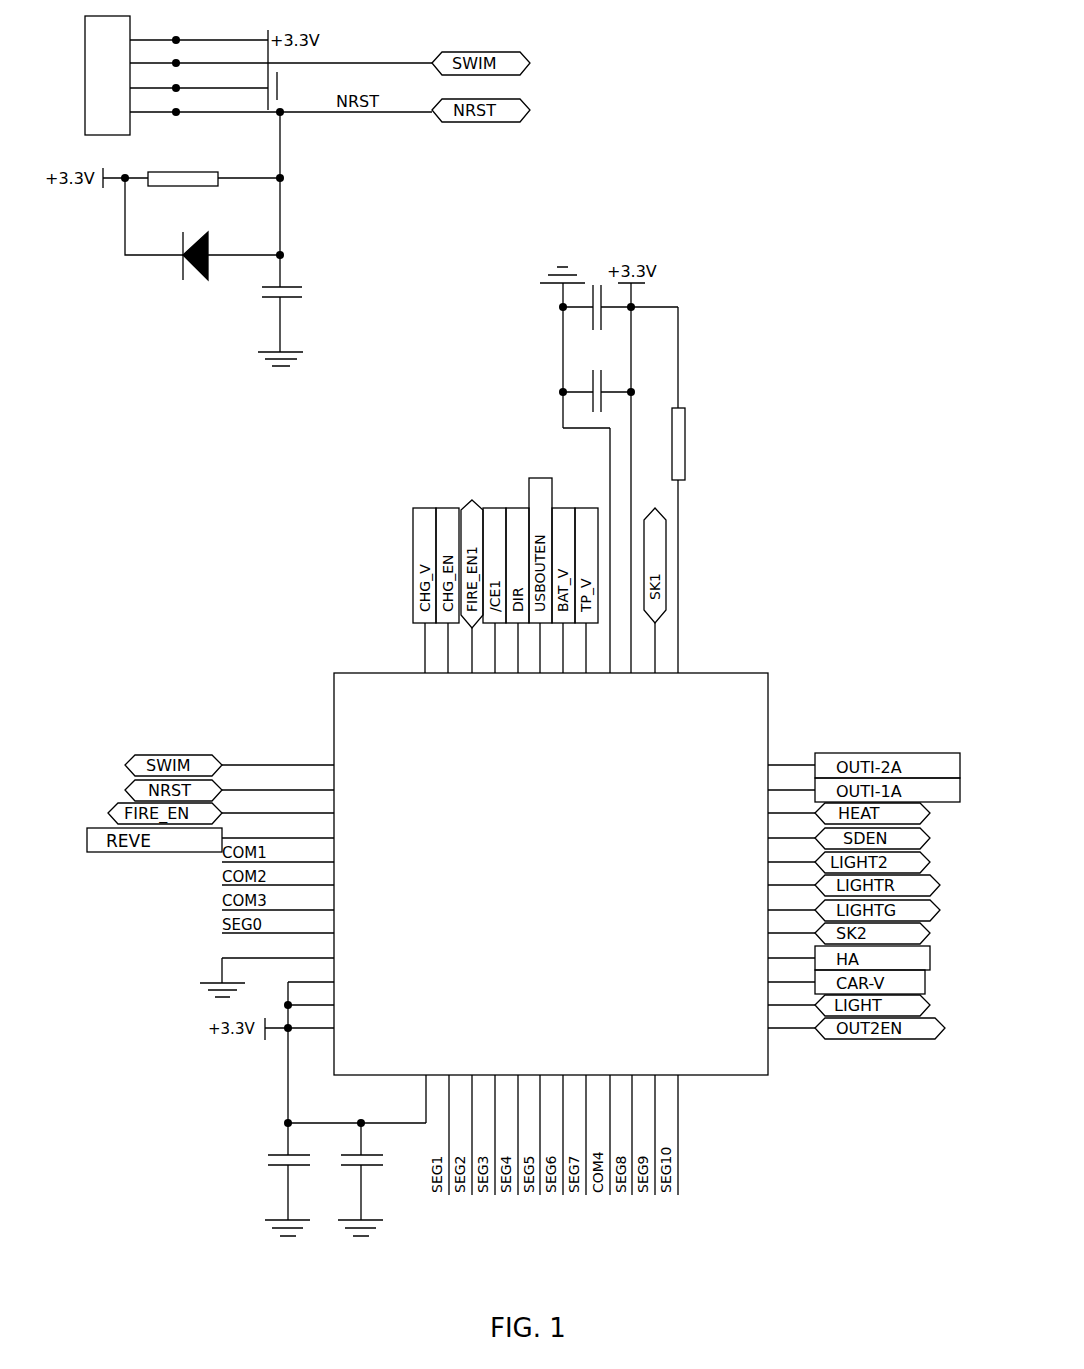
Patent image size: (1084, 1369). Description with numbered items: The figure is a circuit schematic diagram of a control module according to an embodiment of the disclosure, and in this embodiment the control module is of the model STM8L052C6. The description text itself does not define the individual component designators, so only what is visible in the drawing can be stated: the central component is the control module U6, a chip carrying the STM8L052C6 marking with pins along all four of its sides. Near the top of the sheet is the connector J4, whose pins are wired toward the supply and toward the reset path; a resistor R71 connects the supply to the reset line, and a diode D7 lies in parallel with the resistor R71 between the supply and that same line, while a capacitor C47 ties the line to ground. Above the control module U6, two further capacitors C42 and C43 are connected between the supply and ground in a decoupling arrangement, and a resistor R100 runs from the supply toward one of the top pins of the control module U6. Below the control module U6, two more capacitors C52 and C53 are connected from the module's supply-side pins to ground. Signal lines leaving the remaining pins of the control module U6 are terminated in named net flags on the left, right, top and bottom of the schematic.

The ISP connector J4 is at (258, 76).
The resistor R71 is at (193, 171).
The diode D7 is at (204, 229).
The capacitor C47 is at (263, 326).
The capacitor C42 is at (618, 315).
The capacitor C43 is at (597, 399).
The resistor R100 is at (708, 490).
The microcontroller STM8L052C6 U6 is at (518, 909).
The capacitor C52 is at (302, 1194).
The capacitor C53 is at (375, 1194).